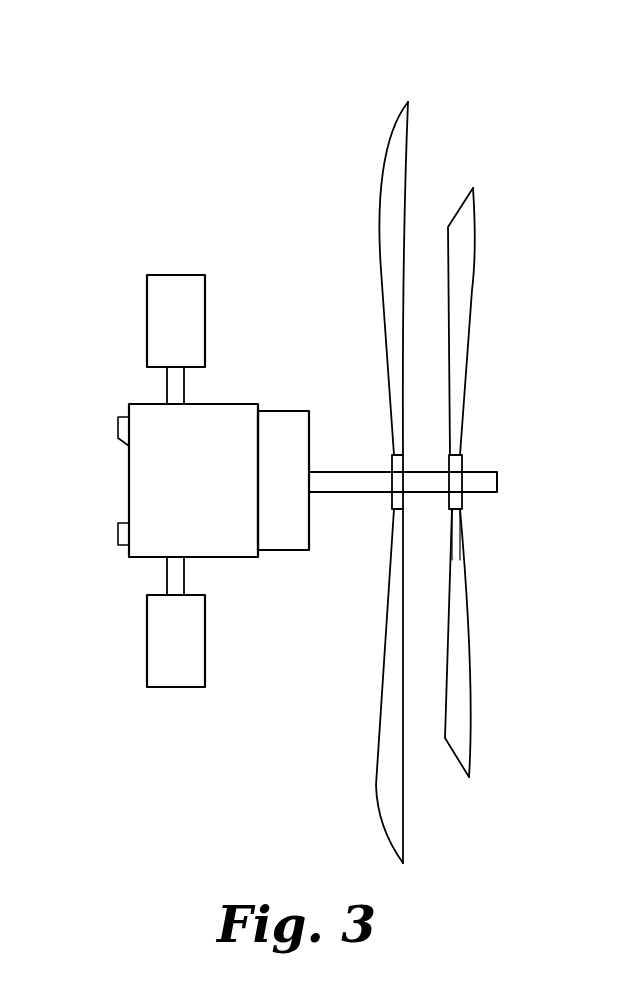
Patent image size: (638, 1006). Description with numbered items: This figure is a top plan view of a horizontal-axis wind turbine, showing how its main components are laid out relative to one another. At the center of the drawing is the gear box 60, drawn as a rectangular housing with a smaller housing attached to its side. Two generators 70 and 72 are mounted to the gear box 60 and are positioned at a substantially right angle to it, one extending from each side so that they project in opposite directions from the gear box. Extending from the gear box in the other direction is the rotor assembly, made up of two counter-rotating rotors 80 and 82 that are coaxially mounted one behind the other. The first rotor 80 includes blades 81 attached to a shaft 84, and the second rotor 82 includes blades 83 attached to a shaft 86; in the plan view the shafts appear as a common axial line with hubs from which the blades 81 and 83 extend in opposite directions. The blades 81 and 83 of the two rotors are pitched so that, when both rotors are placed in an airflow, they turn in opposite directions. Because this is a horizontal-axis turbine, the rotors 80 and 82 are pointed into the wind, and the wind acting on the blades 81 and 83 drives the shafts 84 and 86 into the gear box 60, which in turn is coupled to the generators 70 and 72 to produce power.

The gear box 60 is at (127, 483).
The generator 70 is at (146, 297).
The generator 72 is at (146, 633).
The rotor 80 is at (349, 438).
The blades 81 is at (392, 177).
The rotor 82 is at (499, 432).
The blades 83 is at (468, 248).
The shaft 84 is at (427, 480).
The shaft 86 is at (349, 480).